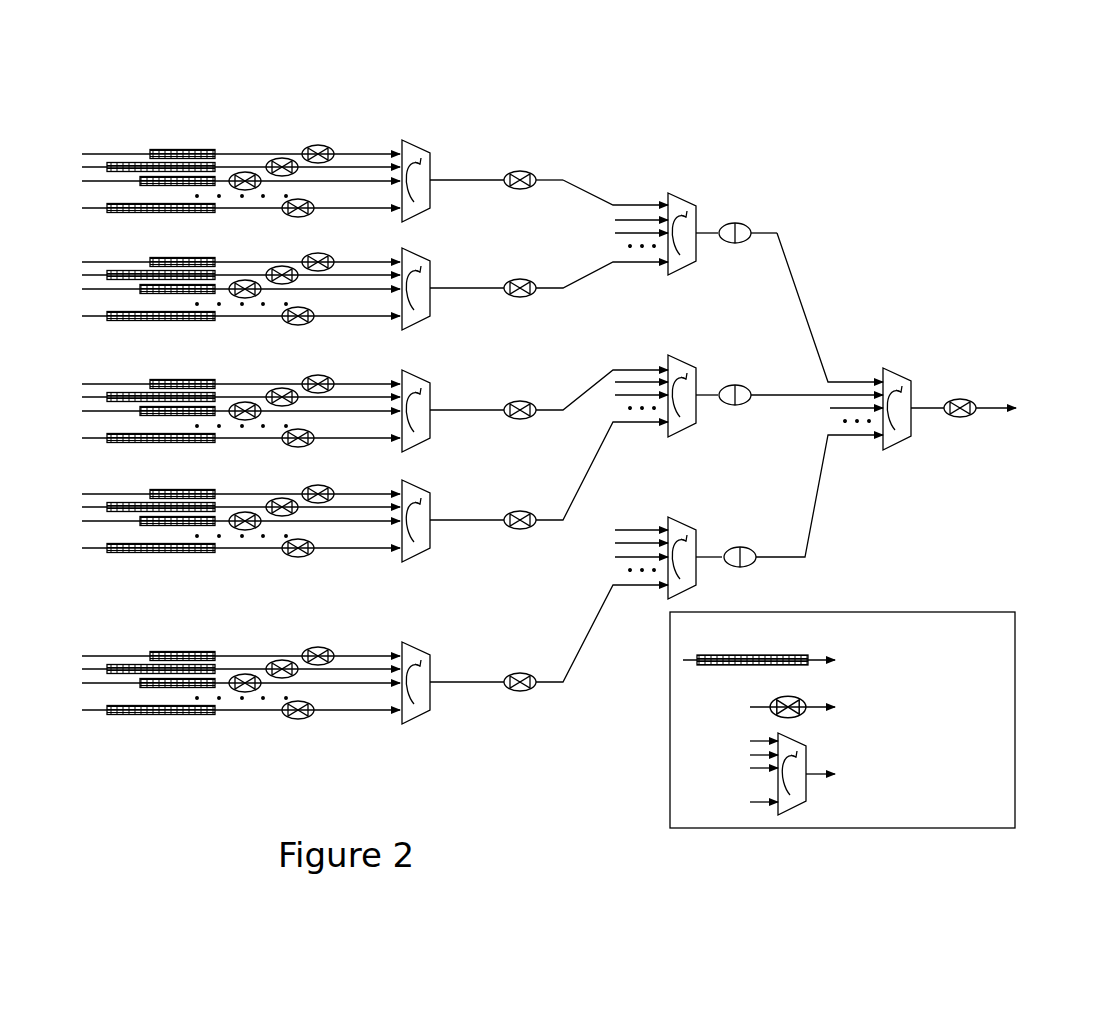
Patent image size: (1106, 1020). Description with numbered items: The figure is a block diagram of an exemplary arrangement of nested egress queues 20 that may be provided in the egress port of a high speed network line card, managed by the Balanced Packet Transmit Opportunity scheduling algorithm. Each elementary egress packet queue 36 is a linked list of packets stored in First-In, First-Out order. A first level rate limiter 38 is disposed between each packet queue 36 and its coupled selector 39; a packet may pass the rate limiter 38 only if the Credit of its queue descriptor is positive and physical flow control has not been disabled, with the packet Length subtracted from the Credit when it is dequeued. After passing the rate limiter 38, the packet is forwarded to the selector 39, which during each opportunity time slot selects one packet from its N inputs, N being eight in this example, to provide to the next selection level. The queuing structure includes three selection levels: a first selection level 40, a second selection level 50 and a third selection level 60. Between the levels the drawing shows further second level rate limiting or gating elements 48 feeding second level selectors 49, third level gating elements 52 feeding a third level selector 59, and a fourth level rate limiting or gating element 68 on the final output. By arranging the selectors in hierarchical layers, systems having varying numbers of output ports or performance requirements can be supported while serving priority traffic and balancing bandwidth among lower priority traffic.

The hierarchical egress scheduler 20 is at (1030, 168).
The packet queue 36 is at (182, 134).
The first level rate limiter 38 is at (334, 133).
The selector 39 is at (417, 150).
The first selection level 40 is at (428, 113).
The second level rate limiter or gate 48 is at (517, 171).
The second level BPTO selector 49 is at (681, 197).
The second selection level 50 is at (705, 153).
The third level gate 52 is at (741, 223).
The third level BPTO selector 59 is at (894, 371).
The third selection level 60 is at (918, 309).
The fourth level rate limiter or gate 68 is at (948, 400).